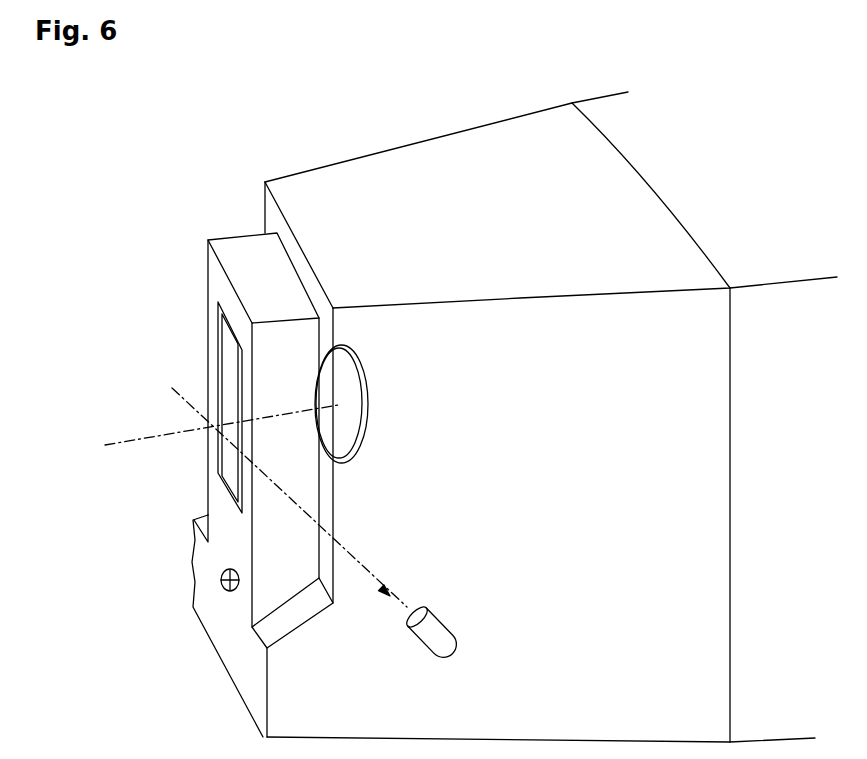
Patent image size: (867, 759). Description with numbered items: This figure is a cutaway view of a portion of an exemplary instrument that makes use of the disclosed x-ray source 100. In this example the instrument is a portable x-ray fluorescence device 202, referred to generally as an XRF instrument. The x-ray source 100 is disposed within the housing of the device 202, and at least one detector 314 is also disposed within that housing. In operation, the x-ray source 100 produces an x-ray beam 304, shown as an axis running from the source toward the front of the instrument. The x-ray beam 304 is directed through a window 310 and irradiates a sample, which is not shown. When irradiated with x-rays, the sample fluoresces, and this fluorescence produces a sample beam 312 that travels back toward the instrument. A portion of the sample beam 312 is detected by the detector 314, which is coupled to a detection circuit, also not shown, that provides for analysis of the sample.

The portable x-ray fluorescence device 202 is at (426, 132).
The window 310 is at (233, 360).
The sample beam 312 is at (158, 440).
The detector 314 is at (368, 427).
The x-ray beam 304 is at (400, 602).
The x-ray source 100 is at (435, 643).